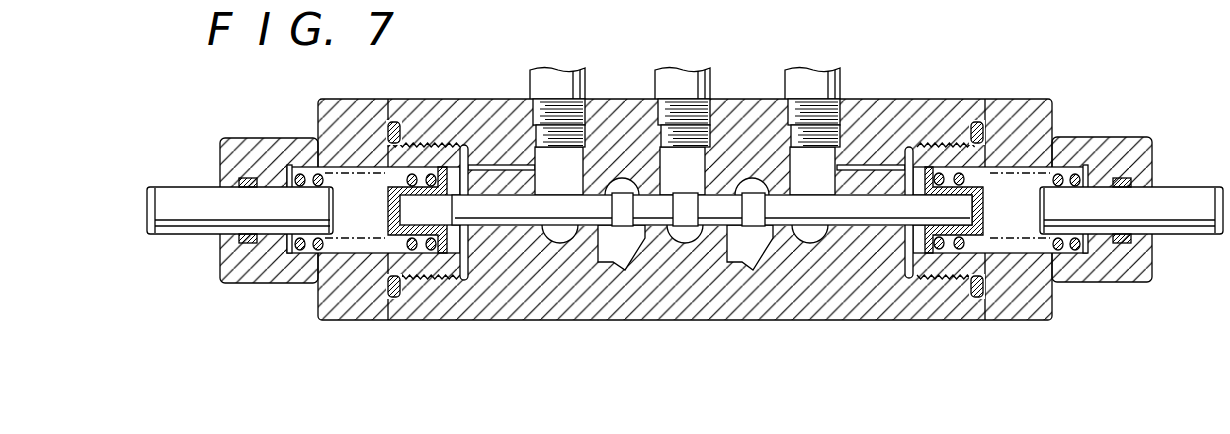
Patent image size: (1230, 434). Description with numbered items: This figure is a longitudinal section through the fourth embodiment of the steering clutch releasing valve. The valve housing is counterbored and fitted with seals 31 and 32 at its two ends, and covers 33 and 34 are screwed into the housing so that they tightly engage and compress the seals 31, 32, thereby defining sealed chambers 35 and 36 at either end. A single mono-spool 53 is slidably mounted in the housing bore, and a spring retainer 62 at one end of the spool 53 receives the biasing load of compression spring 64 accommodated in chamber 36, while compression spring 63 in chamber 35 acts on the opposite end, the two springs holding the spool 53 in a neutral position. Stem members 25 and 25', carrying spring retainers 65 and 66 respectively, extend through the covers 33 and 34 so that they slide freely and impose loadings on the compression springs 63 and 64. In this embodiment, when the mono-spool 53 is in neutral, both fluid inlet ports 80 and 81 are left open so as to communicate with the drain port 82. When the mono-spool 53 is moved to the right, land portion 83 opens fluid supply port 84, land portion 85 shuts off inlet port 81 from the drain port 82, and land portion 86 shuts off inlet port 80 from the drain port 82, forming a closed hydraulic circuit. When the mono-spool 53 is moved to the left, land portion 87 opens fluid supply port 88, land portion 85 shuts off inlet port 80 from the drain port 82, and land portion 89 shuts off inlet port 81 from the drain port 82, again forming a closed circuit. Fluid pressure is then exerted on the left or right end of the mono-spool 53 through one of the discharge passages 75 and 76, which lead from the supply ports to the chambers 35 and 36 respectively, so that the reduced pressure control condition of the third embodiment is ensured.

The stem member 25 is at (240, 200).
The stem member 25' is at (1131, 200).
The seal 31 is at (394, 297).
The seal 32 is at (973, 302).
The cover 33 is at (256, 266).
The cover 34 is at (1042, 300).
The sealed chamber 35 is at (320, 254).
The sealed chamber 36 is at (1065, 254).
The mono-spool 53 is at (712, 215).
The spring retainer 62 is at (930, 172).
The compression spring 63 is at (315, 164).
The compression spring 64 is at (1067, 172).
The spring retainer 65 is at (283, 164).
The spring retainer 66 is at (1090, 176).
The discharge passage 75 is at (511, 170).
The discharge passage 76 is at (882, 170).
The fluid inlet port 80 is at (613, 250).
The fluid inlet port 81 is at (740, 248).
The drain port 82 is at (703, 82).
The land portion 83 is at (792, 204).
The fluid supply port 84 is at (838, 82).
The land portion 85 is at (692, 198).
The land portion 86 is at (632, 228).
The land portion 87 is at (467, 212).
The fluid supply port 88 is at (580, 82).
The land portion 89 is at (762, 228).